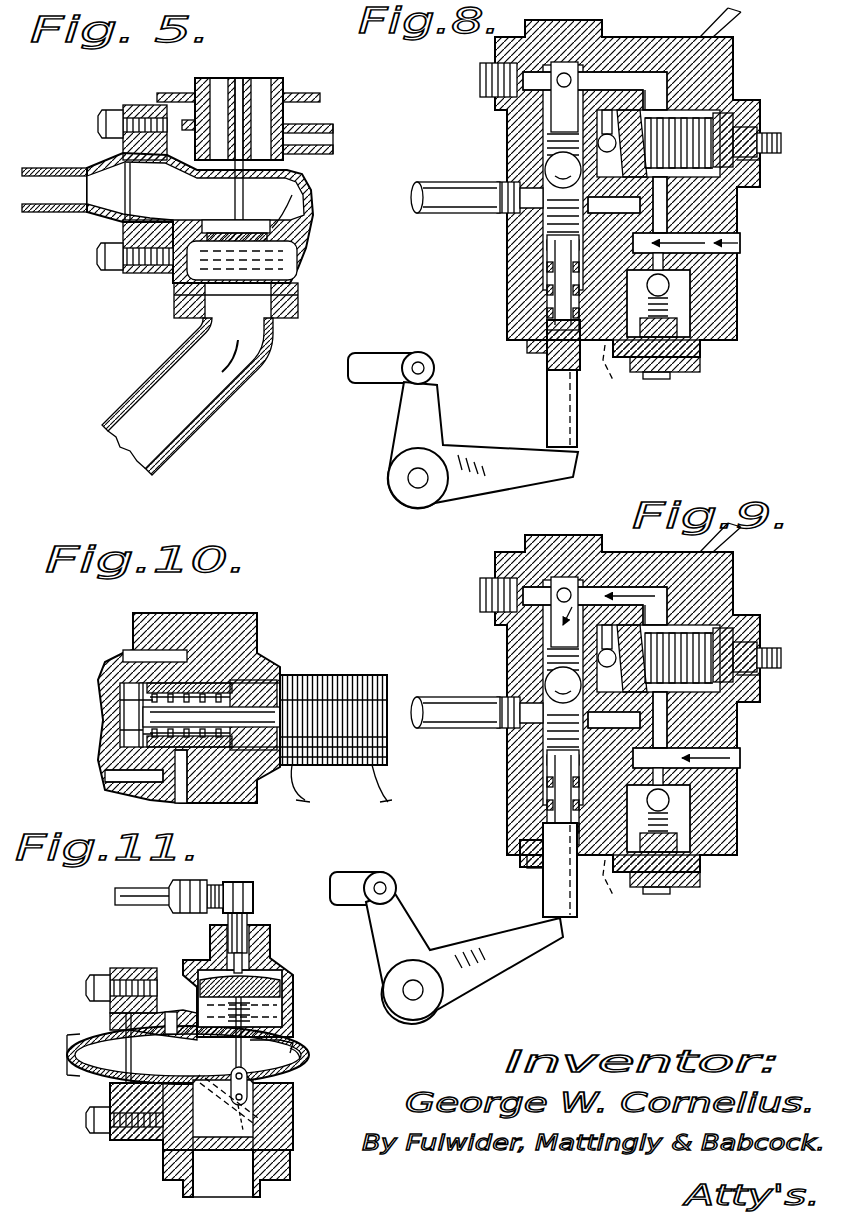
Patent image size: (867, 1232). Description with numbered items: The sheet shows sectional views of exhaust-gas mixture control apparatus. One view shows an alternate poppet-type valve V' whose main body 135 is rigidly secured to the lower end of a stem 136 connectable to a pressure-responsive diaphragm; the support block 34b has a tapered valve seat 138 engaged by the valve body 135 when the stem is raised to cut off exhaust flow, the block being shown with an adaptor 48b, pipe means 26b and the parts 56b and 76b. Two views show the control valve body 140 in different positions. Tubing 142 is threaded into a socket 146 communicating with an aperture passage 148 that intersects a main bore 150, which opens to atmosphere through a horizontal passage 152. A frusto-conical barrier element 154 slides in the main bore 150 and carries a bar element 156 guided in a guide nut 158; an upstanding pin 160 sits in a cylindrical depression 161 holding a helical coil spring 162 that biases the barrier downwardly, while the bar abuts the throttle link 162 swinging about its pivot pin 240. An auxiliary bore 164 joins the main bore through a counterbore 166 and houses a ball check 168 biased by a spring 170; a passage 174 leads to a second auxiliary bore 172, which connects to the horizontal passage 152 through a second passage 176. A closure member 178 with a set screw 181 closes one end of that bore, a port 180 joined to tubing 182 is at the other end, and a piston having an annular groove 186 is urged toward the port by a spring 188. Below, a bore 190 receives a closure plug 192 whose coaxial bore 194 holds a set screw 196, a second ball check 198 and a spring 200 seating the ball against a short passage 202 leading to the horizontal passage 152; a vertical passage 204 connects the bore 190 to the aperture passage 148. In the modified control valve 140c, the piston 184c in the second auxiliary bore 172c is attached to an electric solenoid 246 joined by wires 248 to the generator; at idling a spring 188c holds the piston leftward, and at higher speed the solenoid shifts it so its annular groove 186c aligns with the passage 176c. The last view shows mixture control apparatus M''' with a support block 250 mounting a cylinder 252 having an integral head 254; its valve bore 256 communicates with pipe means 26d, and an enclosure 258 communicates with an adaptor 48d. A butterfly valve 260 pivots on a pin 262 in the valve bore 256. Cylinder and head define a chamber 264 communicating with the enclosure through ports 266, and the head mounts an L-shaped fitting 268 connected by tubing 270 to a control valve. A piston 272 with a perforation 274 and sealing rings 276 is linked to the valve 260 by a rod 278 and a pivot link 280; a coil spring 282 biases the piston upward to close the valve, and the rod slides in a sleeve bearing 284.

In FIG. 5, the inlet pipe 48b is at (64, 169).
In FIG. 5, the cylinder 56b is at (193, 80).
In FIG. 5, the stem 136 is at (246, 102).
In FIG. 5, the side outlet 76b is at (320, 126).
In FIG. 5, the main body 135 is at (308, 184).
In FIG. 5, the tapered valve seat 138 is at (215, 215).
In FIG. 5, the support block 34b is at (312, 240).
In FIG. 5, the valve V' is at (268, 260).
In FIG. 5, the outlet pipe 26b is at (224, 434).
In FIG. 8, the control valve body 140 is at (736, 50).
In FIG. 9, the control valve body 140 is at (627, 703).
In FIG. 10, the modified control valve 140c is at (247, 612).
In FIG. 8, the tubing 142 is at (420, 185).
In FIG. 9, the tubing 142 is at (450, 729).
In FIG. 8, the threaded socket 146 is at (498, 185).
In FIG. 9, the threaded socket 146 is at (472, 639).
In FIG. 8, the aperture passage 148 is at (546, 222).
In FIG. 9, the aperture passage 148 is at (509, 745).
In FIG. 8, the main bore 150 is at (538, 346).
In FIG. 9, the main bore 150 is at (505, 847).
In FIG. 8, the horizontal passage 152 is at (745, 243).
In FIG. 9, the horizontal passage 152 is at (717, 769).
In FIG. 8, the frusto-conical barrier element 154 is at (553, 272).
In FIG. 9, the frusto-conical barrier element 154 is at (505, 797).
In FIG. 8, the bar element 156 is at (555, 412).
In FIG. 9, the bar element 156 is at (515, 872).
In FIG. 8, the guide nut 158 is at (548, 360).
In FIG. 9, the guide nut 158 is at (499, 867).
In FIG. 8, the upstanding pin 160 is at (548, 292).
In FIG. 9, the upstanding pin 160 is at (505, 814).
In FIG. 8, the cylindrical depression 161 is at (548, 248).
In FIG. 9, the cylindrical depression 161 is at (506, 785).
In FIG. 8, the helical coil spring 162 is at (541, 478).
In FIG. 9, the helical coil spring 162 is at (520, 950).
In FIG. 8, the auxiliary bore 164 is at (546, 136).
In FIG. 9, the auxiliary bore 164 is at (508, 650).
In FIG. 8, the counterbore 166 is at (538, 198).
In FIG. 9, the counterbore 166 is at (478, 703).
In FIG. 8, the ball check 168 is at (546, 162).
In FIG. 9, the ball check 168 is at (510, 676).
In FIG. 8, the helical coil spring 170 is at (550, 78).
In FIG. 9, the helical coil spring 170 is at (506, 612).
In FIG. 8, the second auxiliary bore 172 is at (668, 100).
In FIG. 9, the second auxiliary bore 172 is at (715, 602).
In FIG. 10, the second auxiliary bore 172c is at (120, 705).
In FIG. 8, the passage 174 is at (645, 72).
In FIG. 9, the passage 174 is at (654, 591).
In FIG. 10, the passage 174 is at (150, 650).
In FIG. 8, the second passage 176 is at (668, 218).
In FIG. 9, the second passage 176 is at (727, 728).
In FIG. 10, the passage 176c is at (175, 806).
In FIG. 8, the closure member 178 is at (740, 108).
In FIG. 9, the closure member 178 is at (726, 640).
In FIG. 8, the port 180 is at (607, 130).
In FIG. 9, the port 180 is at (625, 609).
In FIG. 8, the set screw 181 is at (770, 158).
In FIG. 9, the set screw 181 is at (772, 695).
In FIG. 8, the tubing 182 is at (742, 12).
In FIG. 9, the tubing 182 is at (749, 537).
In FIG. 10, the piston 184c is at (143, 740).
In FIG. 8, the annular groove 186 is at (645, 205).
In FIG. 9, the annular groove 186 is at (695, 726).
In FIG. 10, the annular groove 186c is at (190, 693).
In FIG. 8, the helical coil spring 188 is at (768, 132).
In FIG. 9, the helical coil spring 188 is at (774, 644).
In FIG. 10, the spring 188c is at (215, 805).
In FIG. 8, the bore 190 is at (670, 305).
In FIG. 9, the bore 190 is at (721, 832).
In FIG. 8, the closure plug 192 is at (700, 362).
In FIG. 9, the closure plug 192 is at (691, 882).
In FIG. 8, the coaxial bore 194 is at (702, 345).
In FIG. 9, the coaxial bore 194 is at (669, 888).
In FIG. 8, the set screw 196 is at (670, 376).
In FIG. 9, the set screw 196 is at (679, 915).
In FIG. 8, the second ball check 198 is at (670, 285).
In FIG. 9, the second ball check 198 is at (719, 808).
In FIG. 8, the helical coil spring 200 is at (678, 327).
In FIG. 9, the helical coil spring 200 is at (716, 853).
In FIG. 8, the short passage 202 is at (692, 275).
In FIG. 9, the short passage 202 is at (712, 810).
In FIG. 8, the vertical passage 204 is at (620, 378).
In FIG. 9, the vertical passage 204 is at (622, 893).
In FIG. 8, the pivot pin 240 is at (420, 486).
In FIG. 9, the pivot pin 240 is at (418, 1000).
In FIG. 10, the electric solenoid 246 is at (362, 676).
In FIG. 10, the wires 248 is at (300, 792).
In FIG. 11, the support block 250 is at (322, 1068).
In FIG. 11, the cylinder 252 is at (296, 984).
In FIG. 11, the integral head 254 is at (262, 980).
In FIG. 11, the valve bore 256 is at (252, 1146).
In FIG. 11, the enclosure 258 is at (147, 1060).
In FIG. 11, the butterfly type valve 260 is at (253, 1114).
In FIG. 11, the pin 262 is at (157, 1147).
In FIG. 11, the chamber 264 is at (228, 950).
In FIG. 11, the ports 266 is at (270, 1043).
In FIG. 11, the L-shaped fitting 268 is at (258, 890).
In FIG. 11, the tubing 270 is at (143, 903).
In FIG. 11, the piston 272 is at (262, 995).
In FIG. 11, the perforation 274 is at (213, 967).
In FIG. 11, the sealing rings 276 is at (170, 1008).
In FIG. 11, the rod 278 is at (234, 1058).
In FIG. 11, the pivot link 280 is at (250, 1094).
In FIG. 11, the coil spring 282 is at (278, 1013).
In FIG. 11, the sleeve type bearing 284 is at (310, 1056).
In FIG. 11, the adaptor 48d is at (72, 1031).
In FIG. 11, the pipe means 26d is at (267, 1195).
In FIG. 11, the mixture control apparatus M''' is at (279, 907).